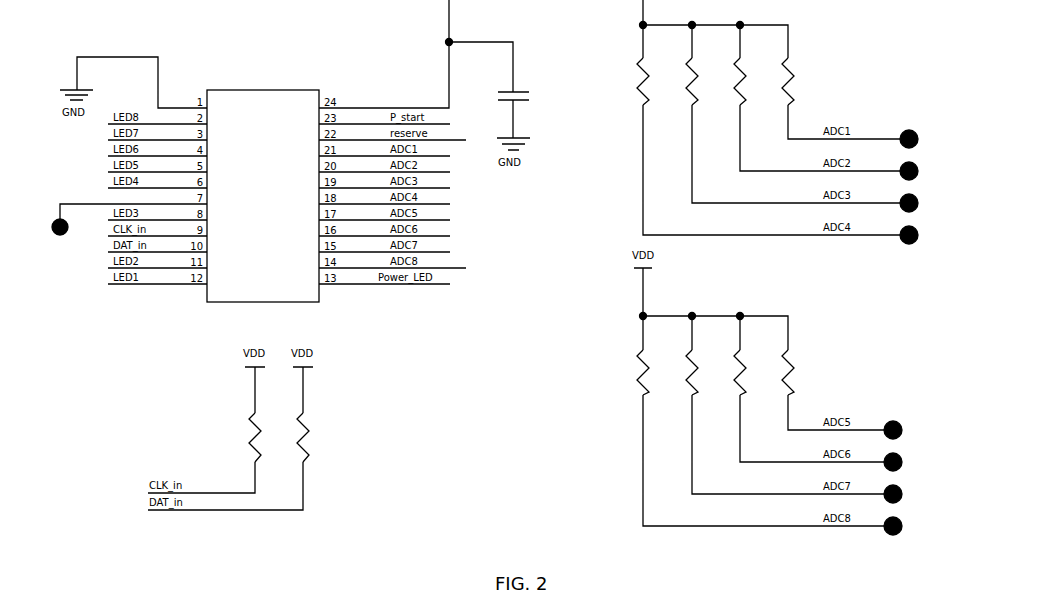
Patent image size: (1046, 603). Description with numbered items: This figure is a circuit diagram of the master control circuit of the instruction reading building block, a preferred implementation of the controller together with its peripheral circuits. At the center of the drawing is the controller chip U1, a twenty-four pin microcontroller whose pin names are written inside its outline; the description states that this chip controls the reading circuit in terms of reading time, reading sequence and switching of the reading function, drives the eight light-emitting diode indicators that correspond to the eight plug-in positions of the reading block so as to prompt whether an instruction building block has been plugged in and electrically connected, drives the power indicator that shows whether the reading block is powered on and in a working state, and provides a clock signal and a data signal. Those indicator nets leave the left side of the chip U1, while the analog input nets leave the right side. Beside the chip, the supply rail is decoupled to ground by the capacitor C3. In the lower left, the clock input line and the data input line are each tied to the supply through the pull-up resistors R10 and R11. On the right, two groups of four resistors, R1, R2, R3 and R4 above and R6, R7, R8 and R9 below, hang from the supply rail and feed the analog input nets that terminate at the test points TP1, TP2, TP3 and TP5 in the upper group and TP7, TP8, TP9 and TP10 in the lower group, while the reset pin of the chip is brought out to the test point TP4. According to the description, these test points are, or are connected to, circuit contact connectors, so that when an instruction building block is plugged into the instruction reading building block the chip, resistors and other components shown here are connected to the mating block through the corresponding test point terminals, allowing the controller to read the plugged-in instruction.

The microcontroller MC32F7343 U1 is at (263, 196).
The decoupling capacitor 0.1uF/16V C3 is at (539, 107).
The pull-up resistor 10K R1 is at (651, 81).
The pull-up resistor 10K R2 is at (700, 81).
The pull-up resistor 10K R3 is at (748, 81).
The pull-up resistor 10K R4 is at (796, 81).
The pull-up resistor 10K R6 is at (651, 373).
The pull-up resistor 10K R7 is at (700, 373).
The pull-up resistor 10K R8 is at (748, 373).
The pull-up resistor 10K R9 is at (796, 373).
The pull-up resistor 2.2K (CLK_in) R10 is at (265, 437).
The pull-up resistor 2.2K (DAT_in) R11 is at (313, 437).
The test point TP1 is at (925, 139).
The test point TP2 is at (925, 171).
The test point TP3 is at (925, 203).
The test point TP4 is at (57, 238).
The test point TP5 is at (925, 235).
The test point TP7 is at (910, 429).
The test point TP8 is at (910, 461).
The test point TP9 is at (910, 493).
The test point TP10 is at (913, 525).